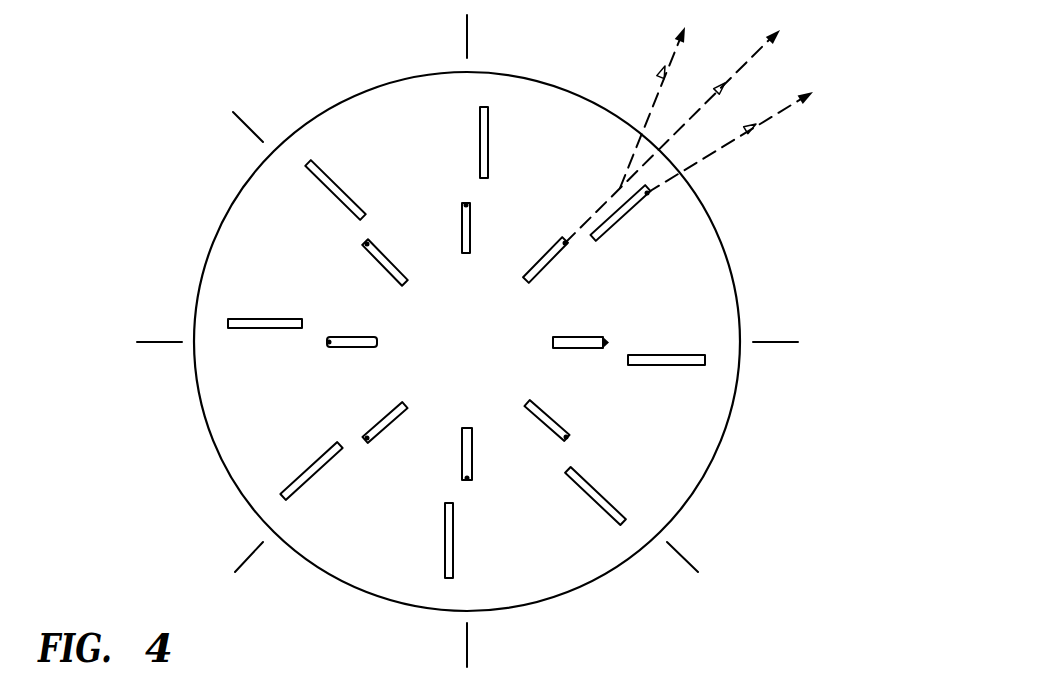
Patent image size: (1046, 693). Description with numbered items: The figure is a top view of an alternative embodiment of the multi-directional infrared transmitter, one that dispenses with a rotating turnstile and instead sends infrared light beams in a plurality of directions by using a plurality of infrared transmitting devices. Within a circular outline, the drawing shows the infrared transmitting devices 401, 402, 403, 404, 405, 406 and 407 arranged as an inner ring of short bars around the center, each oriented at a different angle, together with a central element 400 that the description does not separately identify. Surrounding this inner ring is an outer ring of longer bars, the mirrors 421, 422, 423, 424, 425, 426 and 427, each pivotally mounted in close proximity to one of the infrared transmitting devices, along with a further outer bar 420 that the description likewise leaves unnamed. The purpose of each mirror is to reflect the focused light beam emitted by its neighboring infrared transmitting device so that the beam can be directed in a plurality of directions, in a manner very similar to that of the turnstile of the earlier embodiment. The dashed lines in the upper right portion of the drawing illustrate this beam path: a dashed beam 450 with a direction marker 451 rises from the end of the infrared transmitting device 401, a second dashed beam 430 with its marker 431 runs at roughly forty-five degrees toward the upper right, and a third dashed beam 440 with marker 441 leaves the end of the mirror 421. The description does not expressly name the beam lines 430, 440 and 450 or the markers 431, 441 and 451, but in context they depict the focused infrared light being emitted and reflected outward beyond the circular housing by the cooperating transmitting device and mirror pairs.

The mirror 400 is at (470, 215).
The infrared transmitting device 401 is at (558, 253).
The infrared transmitting device 402 is at (592, 348).
The infrared transmitting device 403 is at (552, 437).
The infrared transmitting device 404 is at (463, 477).
The infrared transmitting device 405 is at (367, 432).
The infrared transmitting device 406 is at (333, 338).
The infrared transmitting device 407 is at (377, 242).
The mirror 420 is at (488, 135).
The mirror 421 is at (633, 212).
The mirror 422 is at (677, 365).
The mirror 423 is at (597, 507).
The mirror 424 is at (445, 550).
The mirror 425 is at (300, 472).
The mirror 426 is at (258, 319).
The mirror 427 is at (333, 176).
The light beam 430 is at (745, 60).
The beam direction indicator 431 is at (718, 85).
The light beam 440 is at (712, 158).
The beam direction indicator 441 is at (756, 130).
The light beam 450 is at (646, 122).
The beam direction indicator 451 is at (660, 75).